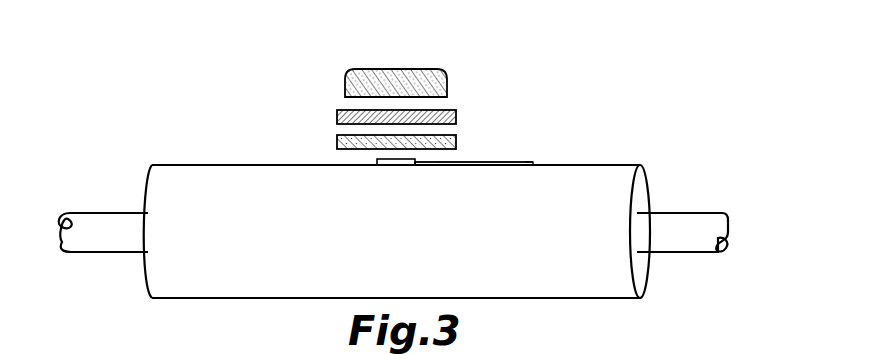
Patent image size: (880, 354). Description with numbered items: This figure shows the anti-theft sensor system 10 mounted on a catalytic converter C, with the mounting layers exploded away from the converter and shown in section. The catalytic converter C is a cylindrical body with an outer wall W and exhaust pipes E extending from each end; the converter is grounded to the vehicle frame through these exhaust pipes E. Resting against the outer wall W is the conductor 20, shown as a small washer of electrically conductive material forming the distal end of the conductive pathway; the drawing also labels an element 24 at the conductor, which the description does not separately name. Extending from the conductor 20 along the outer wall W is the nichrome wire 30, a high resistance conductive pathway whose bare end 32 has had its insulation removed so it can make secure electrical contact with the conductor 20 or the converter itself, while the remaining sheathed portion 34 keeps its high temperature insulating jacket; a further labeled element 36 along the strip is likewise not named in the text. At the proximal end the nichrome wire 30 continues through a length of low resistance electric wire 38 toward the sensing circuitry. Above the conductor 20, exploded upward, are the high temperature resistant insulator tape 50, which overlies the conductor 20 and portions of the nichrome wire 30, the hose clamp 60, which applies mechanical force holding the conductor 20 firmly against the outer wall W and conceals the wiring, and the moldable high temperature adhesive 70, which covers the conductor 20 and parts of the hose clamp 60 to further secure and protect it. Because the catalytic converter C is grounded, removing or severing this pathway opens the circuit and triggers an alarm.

The system 10 is at (512, 37).
The conductor 20 is at (385, 166).
The pad bottom surface 24 is at (401, 166).
The nichrome wire 30 is at (483, 158).
The bare end 32 is at (430, 166).
The sheathed portion 34 is at (487, 166).
The strip middle portion 36 is at (455, 166).
The low resistance electric wire 38 is at (533, 162).
The insulator tape 50 is at (337, 143).
The hose clamp 60 is at (337, 118).
The moldable high temperature adhesive 70 is at (388, 69).
The catalytic converter C is at (397, 231).
The exhaust pipes E is at (106, 215).
The outer wall W is at (224, 165).